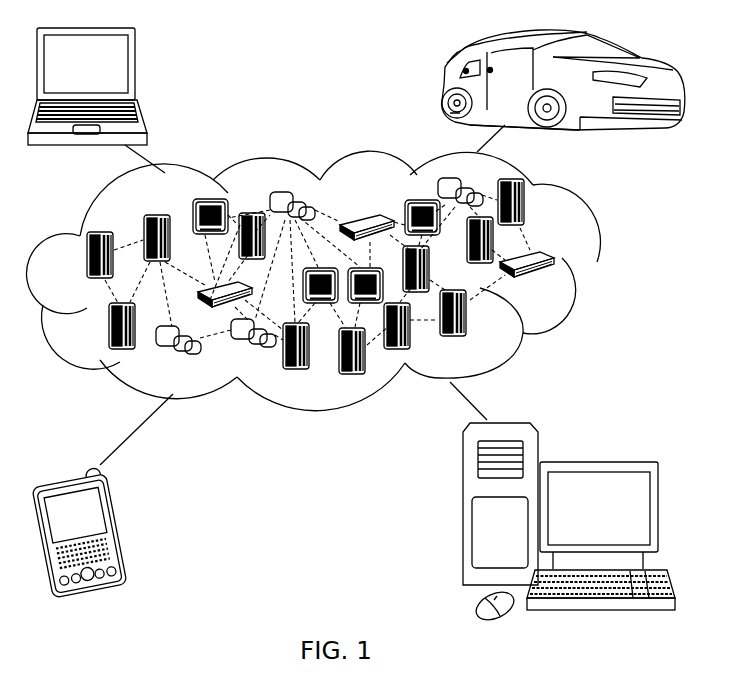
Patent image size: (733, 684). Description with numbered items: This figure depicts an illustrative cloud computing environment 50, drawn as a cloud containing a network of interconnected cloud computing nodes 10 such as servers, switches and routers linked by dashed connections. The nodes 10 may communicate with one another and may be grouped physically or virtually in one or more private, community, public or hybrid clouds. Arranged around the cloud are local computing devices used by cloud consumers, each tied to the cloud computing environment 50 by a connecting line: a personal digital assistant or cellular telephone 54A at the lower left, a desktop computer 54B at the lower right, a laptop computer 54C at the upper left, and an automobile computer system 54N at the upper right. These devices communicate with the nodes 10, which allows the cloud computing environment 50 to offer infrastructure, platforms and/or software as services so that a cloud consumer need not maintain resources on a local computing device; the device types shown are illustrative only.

The cloud computing nodes 10 is at (561, 284).
The cloud computing environment 50 is at (598, 264).
The personal digital assistant (PDA) or cellular telephone 54A is at (128, 532).
The desktop computer 54B is at (608, 449).
The laptop computer 54C is at (136, 72).
The automobile computer system 54N is at (444, 84).